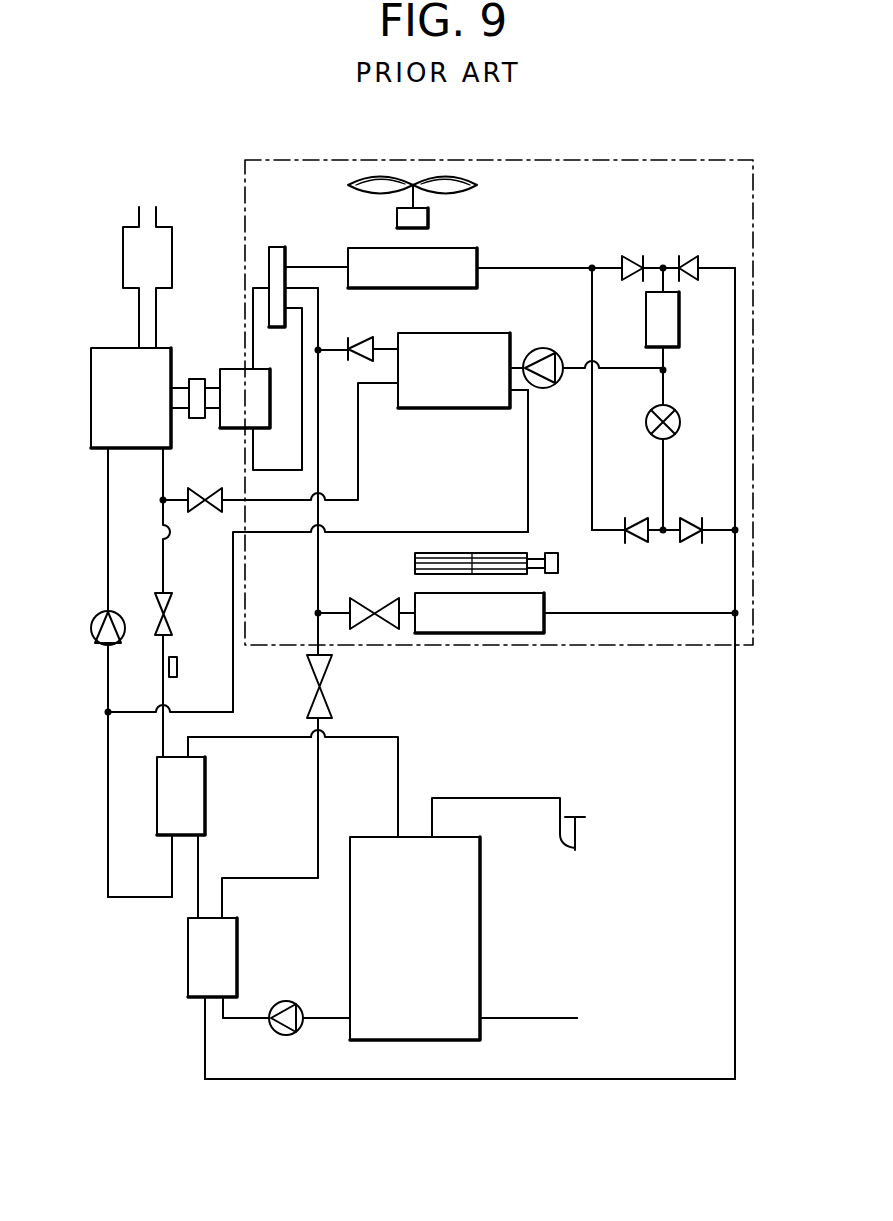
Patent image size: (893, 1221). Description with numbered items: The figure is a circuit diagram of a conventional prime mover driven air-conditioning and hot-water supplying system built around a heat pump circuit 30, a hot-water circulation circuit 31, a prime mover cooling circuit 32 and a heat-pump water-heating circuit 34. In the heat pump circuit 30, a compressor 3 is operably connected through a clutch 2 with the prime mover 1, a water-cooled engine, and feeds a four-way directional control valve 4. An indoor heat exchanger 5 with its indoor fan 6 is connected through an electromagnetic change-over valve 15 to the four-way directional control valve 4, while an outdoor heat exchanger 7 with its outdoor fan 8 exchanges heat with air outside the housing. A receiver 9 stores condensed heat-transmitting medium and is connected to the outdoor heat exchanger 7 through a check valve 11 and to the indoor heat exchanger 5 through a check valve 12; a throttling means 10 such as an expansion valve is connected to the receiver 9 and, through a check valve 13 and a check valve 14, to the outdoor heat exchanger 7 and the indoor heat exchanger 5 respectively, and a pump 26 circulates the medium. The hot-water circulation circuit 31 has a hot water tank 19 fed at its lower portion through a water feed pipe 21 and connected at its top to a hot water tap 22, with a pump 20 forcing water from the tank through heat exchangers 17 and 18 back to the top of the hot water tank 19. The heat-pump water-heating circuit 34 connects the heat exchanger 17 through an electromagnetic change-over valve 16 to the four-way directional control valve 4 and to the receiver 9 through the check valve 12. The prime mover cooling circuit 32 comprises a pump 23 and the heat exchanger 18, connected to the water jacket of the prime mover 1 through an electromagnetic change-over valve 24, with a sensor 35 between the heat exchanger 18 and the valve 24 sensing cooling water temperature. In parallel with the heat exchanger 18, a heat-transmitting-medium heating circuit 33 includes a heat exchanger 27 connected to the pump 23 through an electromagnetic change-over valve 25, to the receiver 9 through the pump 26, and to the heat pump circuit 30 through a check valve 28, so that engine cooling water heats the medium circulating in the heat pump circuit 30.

The prime mover 1 is at (91, 356).
The clutch 2 is at (196, 379).
The compressor 3 is at (228, 369).
The four-way directional control valve 4 is at (277, 247).
The indoor heat exchanger 5 is at (476, 633).
The indoor fan 6 is at (540, 553).
The outdoor heat exchanger 7 is at (470, 248).
The outdoor fan 8 is at (477, 185).
The receiver 9 is at (679, 318).
The throttling means 10 is at (680, 414).
The check valve 11 is at (625, 257).
The check valve 12 is at (686, 258).
The check valve 13 is at (632, 543).
The check valve 14 is at (688, 543).
The electromagnetic change-over valve 15 is at (362, 602).
The electromagnetic change-over valve 16 is at (332, 668).
The heat exchanger 17 is at (237, 945).
The heat exchanger 18 is at (205, 777).
The hot water tank 19 is at (480, 912).
The pump 20 is at (292, 1002).
The water feed pipe 21 is at (553, 1018).
The hot water tap 22 is at (580, 840).
The pump 23 is at (95, 618).
The electromagnetic change-over valve 24 is at (172, 603).
The electromagnetic change-over valve 25 is at (205, 492).
The pump 26 is at (544, 348).
The heat exchanger 27 is at (455, 333).
The check valve 28 is at (354, 342).
The heat pump circuit 30 is at (753, 160).
The hot-water circulation circuit 31 is at (398, 737).
The prime mover cooling circuit 32 is at (128, 897).
The heat-transmitting-medium heating circuit 33 is at (528, 460).
The heat-pump water-heating circuit 34 is at (318, 775).
The sensor 35 is at (177, 665).